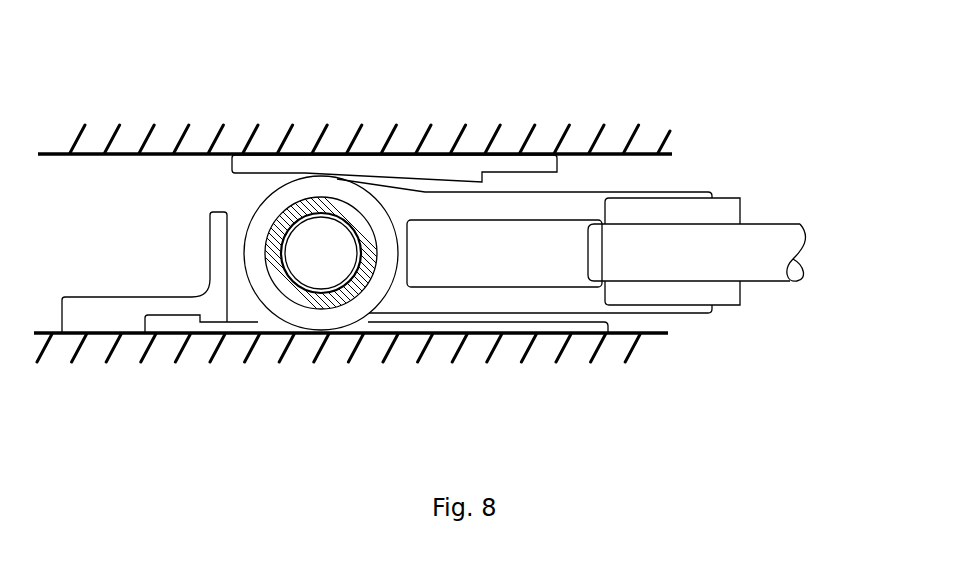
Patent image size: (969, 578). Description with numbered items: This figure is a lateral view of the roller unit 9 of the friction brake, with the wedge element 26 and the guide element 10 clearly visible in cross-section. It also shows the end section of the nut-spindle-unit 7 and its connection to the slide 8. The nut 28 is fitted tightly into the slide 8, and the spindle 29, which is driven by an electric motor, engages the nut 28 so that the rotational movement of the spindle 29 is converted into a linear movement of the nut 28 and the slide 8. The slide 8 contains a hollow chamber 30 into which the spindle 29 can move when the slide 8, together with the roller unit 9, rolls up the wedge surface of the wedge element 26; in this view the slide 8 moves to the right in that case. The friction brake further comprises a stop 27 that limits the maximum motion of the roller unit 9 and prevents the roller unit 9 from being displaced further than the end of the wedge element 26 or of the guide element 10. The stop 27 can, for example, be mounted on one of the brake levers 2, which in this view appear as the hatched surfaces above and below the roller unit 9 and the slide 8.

The brake lever 2 is at (333, 142).
The nut-spindle-unit 7 is at (493, 257).
The slide 8 is at (427, 298).
The roller unit 9 is at (238, 200).
The guide element 10 is at (248, 320).
The wedge element 26 is at (427, 165).
The stop 27 is at (113, 313).
The nut 28 is at (671, 214).
The spindle 29 is at (703, 260).
The hollow chamber 30 is at (492, 260).